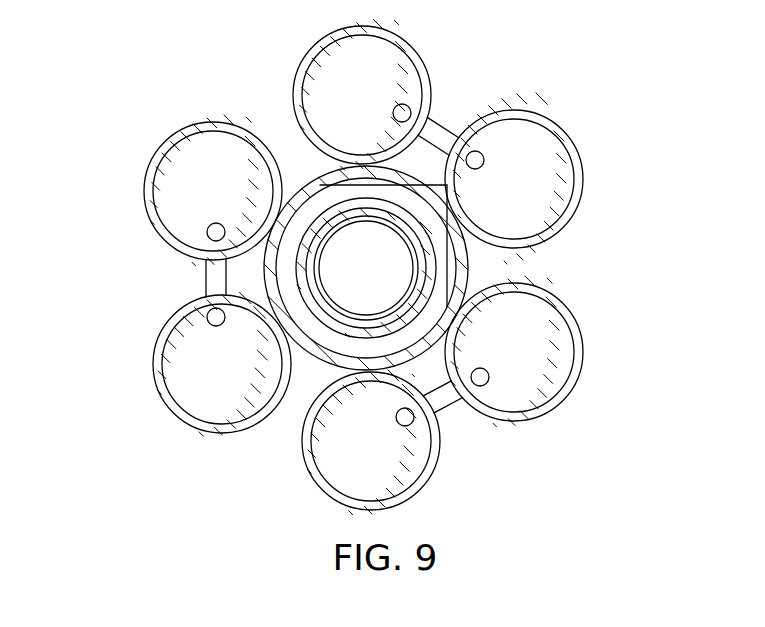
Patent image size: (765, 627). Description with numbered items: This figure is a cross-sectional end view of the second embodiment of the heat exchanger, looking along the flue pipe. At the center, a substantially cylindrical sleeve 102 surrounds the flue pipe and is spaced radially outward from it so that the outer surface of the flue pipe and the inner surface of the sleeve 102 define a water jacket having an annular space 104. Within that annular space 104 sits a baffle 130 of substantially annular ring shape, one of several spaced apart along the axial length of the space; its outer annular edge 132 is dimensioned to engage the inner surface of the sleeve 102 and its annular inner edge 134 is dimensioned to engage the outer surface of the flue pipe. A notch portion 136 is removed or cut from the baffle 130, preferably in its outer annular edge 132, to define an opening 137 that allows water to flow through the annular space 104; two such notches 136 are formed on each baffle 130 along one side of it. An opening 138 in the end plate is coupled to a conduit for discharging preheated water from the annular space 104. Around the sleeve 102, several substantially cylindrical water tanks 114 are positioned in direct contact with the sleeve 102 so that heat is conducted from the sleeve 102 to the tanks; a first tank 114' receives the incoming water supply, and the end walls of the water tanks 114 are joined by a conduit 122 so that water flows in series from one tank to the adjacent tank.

The sleeve 102 is at (390, 235).
The annular space 104 is at (292, 310).
The water tank 114 is at (514, 384).
The first tank 114' is at (389, 86).
The conduit 122 is at (447, 127).
The baffle 130 is at (447, 207).
The outer annular edge 132 is at (362, 362).
The annular inner edge 134 is at (436, 310).
The notch portion 136 is at (330, 178).
The opening 137 is at (467, 240).
The opening 138 is at (352, 170).